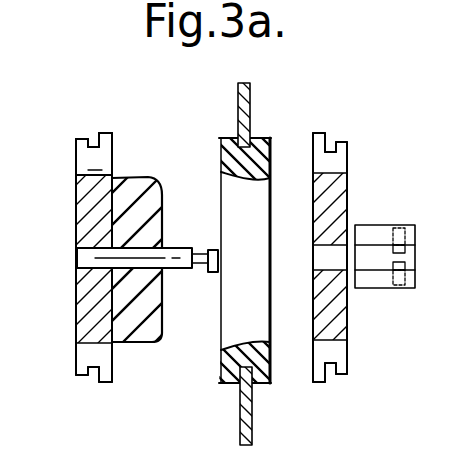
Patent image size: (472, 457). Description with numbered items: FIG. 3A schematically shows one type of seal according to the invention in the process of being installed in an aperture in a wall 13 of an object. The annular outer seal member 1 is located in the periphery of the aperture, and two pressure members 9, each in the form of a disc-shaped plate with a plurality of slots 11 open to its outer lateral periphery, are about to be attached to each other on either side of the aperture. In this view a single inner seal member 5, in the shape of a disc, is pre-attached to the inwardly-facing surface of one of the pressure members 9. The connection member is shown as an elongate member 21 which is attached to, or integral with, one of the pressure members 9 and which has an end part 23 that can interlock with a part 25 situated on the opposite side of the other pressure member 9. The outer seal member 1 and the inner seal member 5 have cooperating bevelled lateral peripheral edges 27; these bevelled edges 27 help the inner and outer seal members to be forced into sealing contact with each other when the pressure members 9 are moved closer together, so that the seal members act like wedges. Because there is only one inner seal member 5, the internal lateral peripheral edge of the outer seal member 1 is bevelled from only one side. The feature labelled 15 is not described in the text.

The outer seal member 1 is at (271, 142).
The inner seal member 5 is at (160, 324).
The pressure member 9 is at (90, 212).
The slot 11 is at (85, 160).
The wall 13 is at (251, 103).
The slot 15 is at (91, 140).
The elongate member 21 is at (177, 251).
The end part 23 is at (217, 262).
The part 25 is at (393, 227).
The bevelled lateral peripheral edge 27 is at (150, 178).